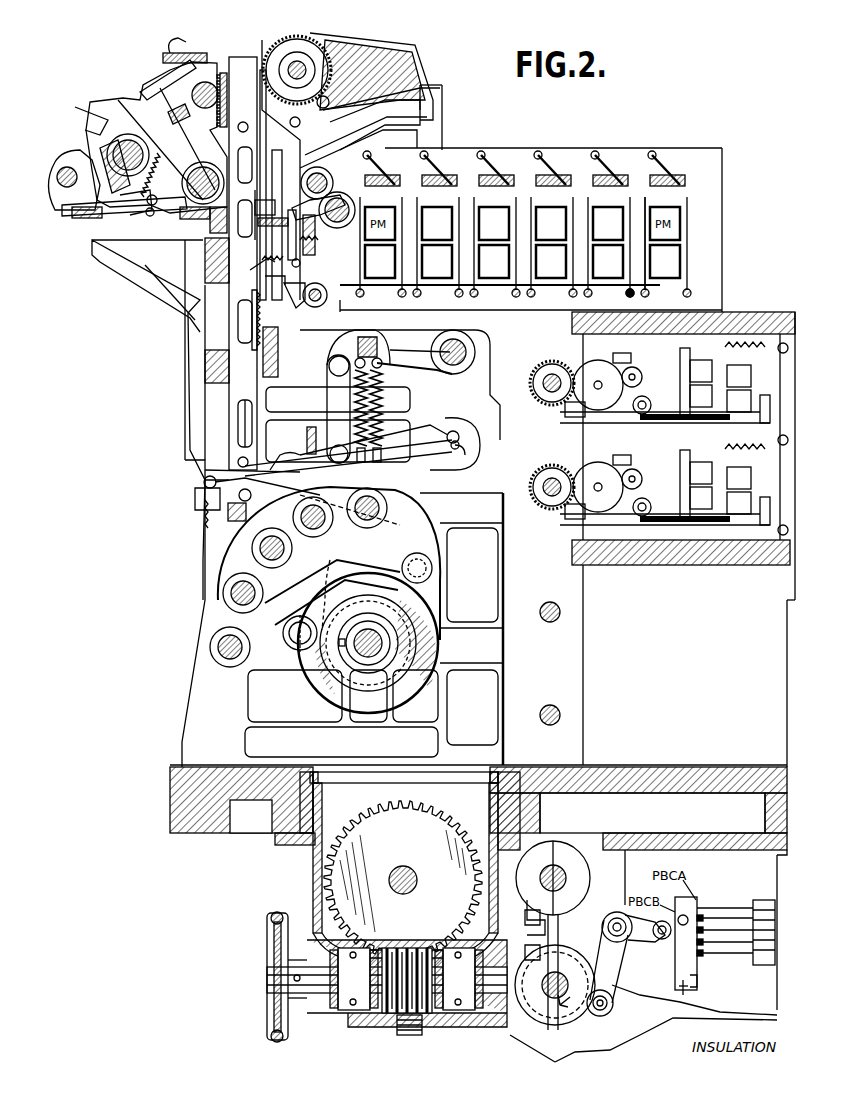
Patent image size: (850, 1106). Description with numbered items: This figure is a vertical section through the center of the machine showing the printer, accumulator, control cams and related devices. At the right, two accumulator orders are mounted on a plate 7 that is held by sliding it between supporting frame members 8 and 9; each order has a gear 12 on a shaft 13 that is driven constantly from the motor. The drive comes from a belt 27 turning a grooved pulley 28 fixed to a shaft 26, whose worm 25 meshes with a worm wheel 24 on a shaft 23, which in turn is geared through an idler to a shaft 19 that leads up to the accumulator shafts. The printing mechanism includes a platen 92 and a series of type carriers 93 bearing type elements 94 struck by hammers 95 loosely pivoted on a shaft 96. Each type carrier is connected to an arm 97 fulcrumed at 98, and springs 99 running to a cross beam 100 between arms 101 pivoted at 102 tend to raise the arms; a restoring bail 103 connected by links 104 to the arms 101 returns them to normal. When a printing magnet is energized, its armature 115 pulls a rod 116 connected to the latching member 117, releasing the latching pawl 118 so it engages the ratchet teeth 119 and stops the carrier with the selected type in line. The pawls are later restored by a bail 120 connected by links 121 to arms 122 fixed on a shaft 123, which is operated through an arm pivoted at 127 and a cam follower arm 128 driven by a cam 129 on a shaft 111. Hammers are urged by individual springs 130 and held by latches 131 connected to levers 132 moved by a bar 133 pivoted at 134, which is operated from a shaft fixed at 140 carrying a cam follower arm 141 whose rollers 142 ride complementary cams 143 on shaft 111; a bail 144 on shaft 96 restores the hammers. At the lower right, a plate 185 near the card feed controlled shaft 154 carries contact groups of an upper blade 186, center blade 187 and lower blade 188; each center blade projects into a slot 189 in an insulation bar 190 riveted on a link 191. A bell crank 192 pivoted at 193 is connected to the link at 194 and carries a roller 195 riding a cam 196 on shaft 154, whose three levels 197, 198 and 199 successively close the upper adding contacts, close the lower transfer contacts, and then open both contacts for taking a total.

The plate 7 is at (590, 438).
The supporting frame member 8 is at (745, 314).
The supporting frame member 9 is at (712, 567).
The gear 12 is at (560, 363).
The shaft 13 is at (545, 383).
The shaft 19 is at (556, 877).
The shaft 23 is at (400, 873).
The worm wheel 24 is at (358, 840).
The worm 25 is at (385, 1000).
The shaft 26 is at (333, 1002).
The belt 27 is at (278, 1042).
The grooved pulley 28 is at (262, 1002).
The platen 92 is at (318, 52).
The type carrier 93 is at (236, 358).
The type element 94 is at (224, 72).
The hammer 95 is at (150, 90).
The shaft 96 is at (148, 137).
The arm 97 is at (430, 448).
The fulcrum 98 is at (458, 437).
The spring 99 is at (385, 400).
The cross beam 100 is at (372, 330).
The arm 101 is at (405, 320).
The pivot 102 is at (455, 350).
The restoring bail 103 is at (320, 440).
The link 104 is at (338, 398).
The shaft 111 is at (374, 652).
The armature 115 is at (655, 286).
The rod 116 is at (600, 288).
The latching member 117 is at (298, 245).
The latching pawl 118 is at (262, 275).
The ratchet teeth 119 is at (274, 320).
The bail 120 is at (310, 305).
The link 121 is at (265, 220).
The arm 122 is at (295, 200).
The shaft 123 is at (340, 205).
The pivot 127 is at (352, 473).
The cam follower arm 128 is at (405, 520).
The cam 129 is at (412, 648).
The spring 130 is at (92, 150).
The latch 131 is at (148, 180).
The lever 132 is at (122, 215).
The bar 133 is at (75, 220).
The pivot 134 is at (60, 178).
The shaft fixing point 140 is at (335, 490).
The cam follower arm 141 is at (305, 585).
The roller 142 is at (420, 562).
The complementary cam 143 is at (330, 668).
The bail 144 is at (207, 92).
The shaft 154 is at (545, 990).
The plate 185 is at (665, 985).
The upper blade 186 is at (715, 918).
The center blade 187 is at (760, 905).
The lower blade 188 is at (705, 908).
The slot 189 is at (700, 982).
The insulation bar 190 is at (684, 995).
The link 191 is at (680, 945).
The bell crank 192 is at (600, 945).
The pivot 193 is at (605, 915).
The pivotal connection 194 is at (625, 902).
The roller 195 is at (615, 1045).
The cam 196 is at (545, 1000).
The cam level 197 is at (595, 1015).
The cam level 198 is at (548, 938).
The cam level 199 is at (616, 960).